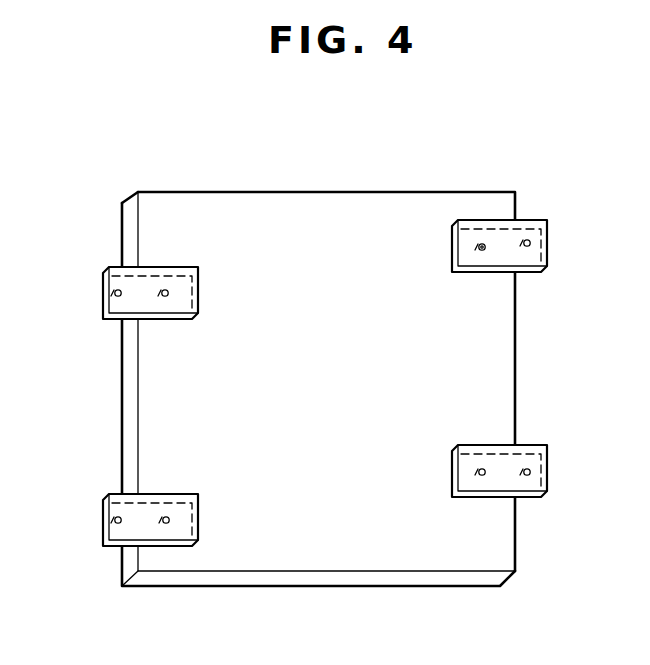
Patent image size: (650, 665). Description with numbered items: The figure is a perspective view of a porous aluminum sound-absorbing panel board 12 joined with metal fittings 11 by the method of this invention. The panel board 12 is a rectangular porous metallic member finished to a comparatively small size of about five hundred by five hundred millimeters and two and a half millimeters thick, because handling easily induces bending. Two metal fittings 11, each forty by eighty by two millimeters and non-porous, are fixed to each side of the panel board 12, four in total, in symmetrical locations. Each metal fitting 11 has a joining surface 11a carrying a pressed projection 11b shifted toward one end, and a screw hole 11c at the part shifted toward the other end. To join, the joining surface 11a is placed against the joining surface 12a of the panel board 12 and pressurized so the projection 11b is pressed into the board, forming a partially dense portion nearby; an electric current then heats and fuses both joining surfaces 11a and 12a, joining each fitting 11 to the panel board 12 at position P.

The aluminum sound-absorbing panel board 12 is at (417, 210).
The joining surface of the panel board 12a is at (472, 460).
The metal fitting 11 is at (123, 282).
The joining surface of the metal fitting 11a is at (188, 278).
The projection 11b is at (163, 300).
The screw hole 11c is at (118, 300).
The joining position P is at (486, 242).